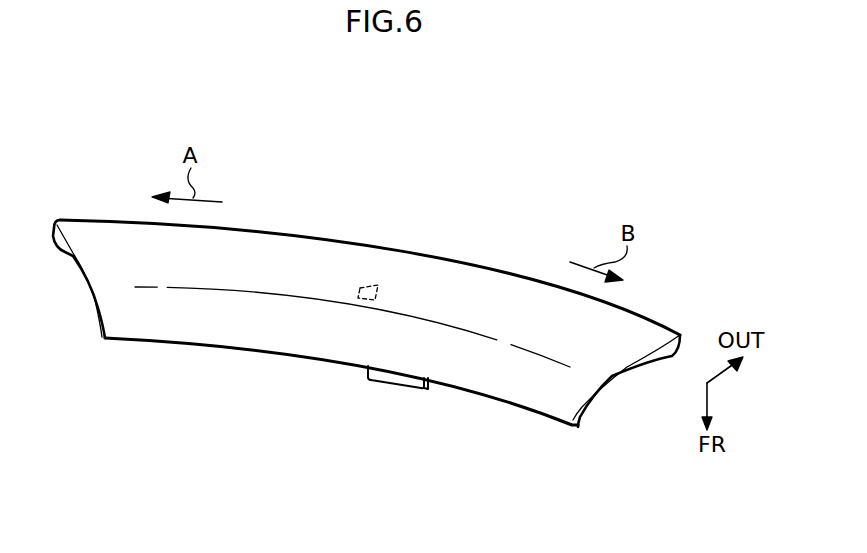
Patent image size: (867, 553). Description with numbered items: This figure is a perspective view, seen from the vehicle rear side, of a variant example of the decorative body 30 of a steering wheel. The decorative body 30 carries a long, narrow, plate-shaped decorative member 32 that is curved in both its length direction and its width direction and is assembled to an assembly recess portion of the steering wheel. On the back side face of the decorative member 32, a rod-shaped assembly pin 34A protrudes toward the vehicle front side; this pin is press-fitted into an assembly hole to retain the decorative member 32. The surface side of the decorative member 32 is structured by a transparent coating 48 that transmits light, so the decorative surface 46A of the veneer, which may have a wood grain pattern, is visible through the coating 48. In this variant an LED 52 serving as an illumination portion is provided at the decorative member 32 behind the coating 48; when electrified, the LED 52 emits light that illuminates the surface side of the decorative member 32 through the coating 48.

The decorative body 30 is at (264, 203).
The decorative member 32 is at (511, 270).
The assembly pin 34A is at (397, 388).
The decorative surface 46A is at (425, 270).
The coating 48 is at (317, 238).
The LED 52 is at (383, 284).